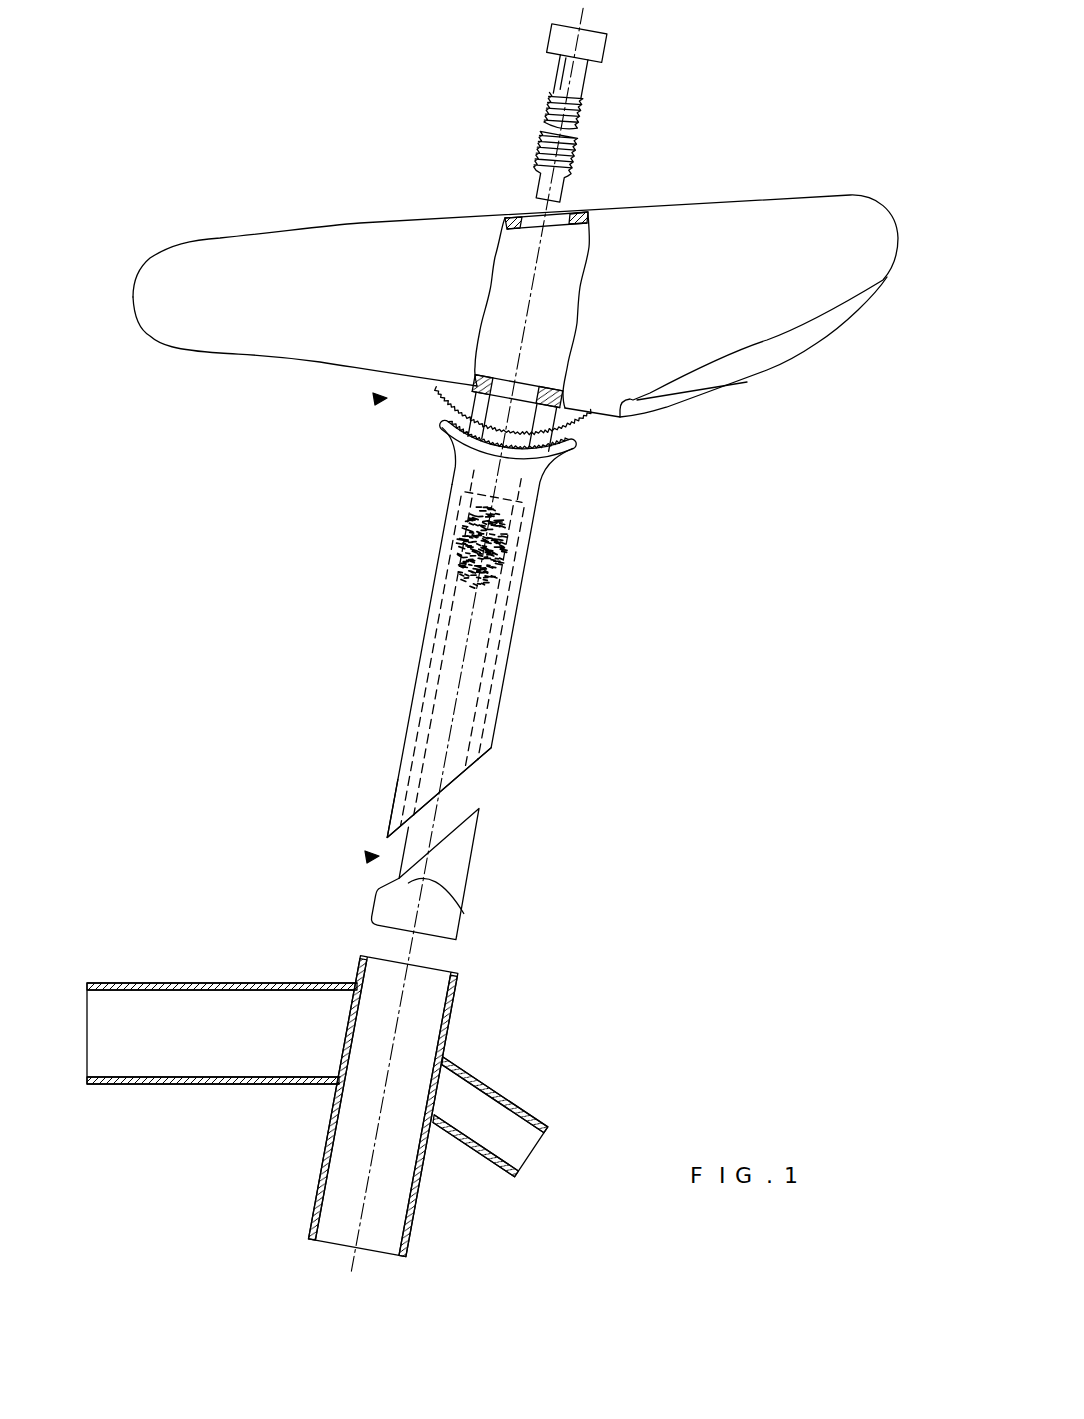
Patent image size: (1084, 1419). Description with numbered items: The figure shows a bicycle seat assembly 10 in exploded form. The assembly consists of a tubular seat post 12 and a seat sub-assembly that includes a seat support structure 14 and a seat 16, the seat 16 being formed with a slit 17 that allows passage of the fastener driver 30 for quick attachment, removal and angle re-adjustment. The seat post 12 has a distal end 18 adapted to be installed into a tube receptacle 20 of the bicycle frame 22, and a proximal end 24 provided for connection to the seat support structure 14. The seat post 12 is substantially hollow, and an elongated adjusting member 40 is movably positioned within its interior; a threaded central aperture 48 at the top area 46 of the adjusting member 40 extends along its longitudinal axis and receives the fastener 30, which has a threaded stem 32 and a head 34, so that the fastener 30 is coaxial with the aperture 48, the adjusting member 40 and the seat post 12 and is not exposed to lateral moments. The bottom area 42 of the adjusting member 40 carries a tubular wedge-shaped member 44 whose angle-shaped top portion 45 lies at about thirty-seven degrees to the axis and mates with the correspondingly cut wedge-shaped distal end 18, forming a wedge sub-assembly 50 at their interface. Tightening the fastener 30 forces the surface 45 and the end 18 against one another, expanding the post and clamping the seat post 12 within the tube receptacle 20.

The bicycle seat assembly 10 is at (374, 403).
The seat post 12 is at (514, 606).
The seat support structure 14 is at (580, 413).
The seat 16 is at (806, 196).
The slit 17 is at (532, 216).
The distal end 18 is at (404, 780).
The tube receptacle 20 is at (452, 1012).
The bicycle frame 22 is at (150, 983).
The proximal end 24 is at (440, 426).
The fastener 30 is at (586, 80).
The threaded stem 32 is at (578, 157).
The head 34 is at (606, 45).
The adjusting member 40 is at (470, 786).
The bottom area 42 is at (432, 830).
The wedge-shaped member 44 is at (440, 888).
The angle-shaped top portion 45 is at (380, 890).
The top area 46 is at (484, 474).
The threaded central aperture 48 is at (500, 556).
The wedge sub-assembly 50 is at (366, 861).